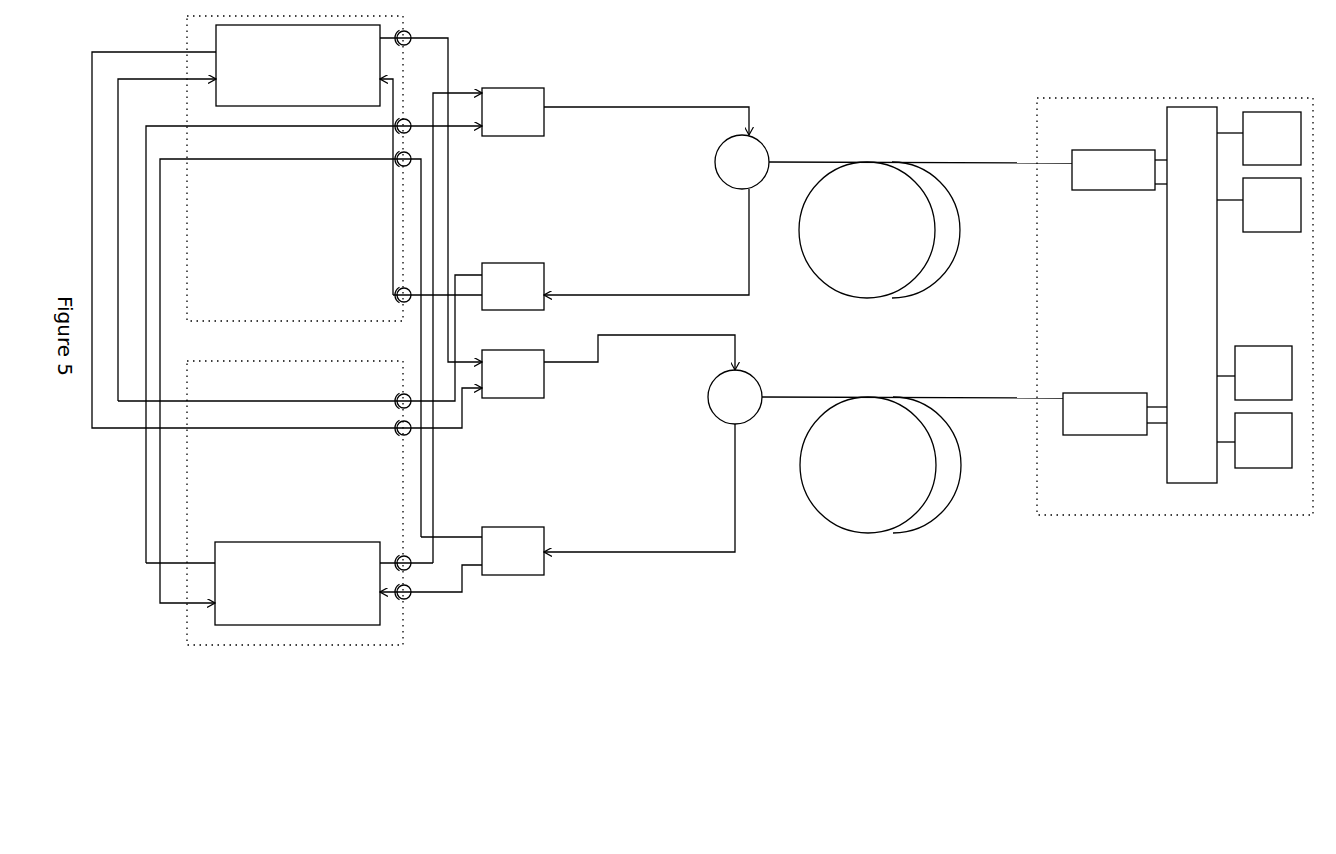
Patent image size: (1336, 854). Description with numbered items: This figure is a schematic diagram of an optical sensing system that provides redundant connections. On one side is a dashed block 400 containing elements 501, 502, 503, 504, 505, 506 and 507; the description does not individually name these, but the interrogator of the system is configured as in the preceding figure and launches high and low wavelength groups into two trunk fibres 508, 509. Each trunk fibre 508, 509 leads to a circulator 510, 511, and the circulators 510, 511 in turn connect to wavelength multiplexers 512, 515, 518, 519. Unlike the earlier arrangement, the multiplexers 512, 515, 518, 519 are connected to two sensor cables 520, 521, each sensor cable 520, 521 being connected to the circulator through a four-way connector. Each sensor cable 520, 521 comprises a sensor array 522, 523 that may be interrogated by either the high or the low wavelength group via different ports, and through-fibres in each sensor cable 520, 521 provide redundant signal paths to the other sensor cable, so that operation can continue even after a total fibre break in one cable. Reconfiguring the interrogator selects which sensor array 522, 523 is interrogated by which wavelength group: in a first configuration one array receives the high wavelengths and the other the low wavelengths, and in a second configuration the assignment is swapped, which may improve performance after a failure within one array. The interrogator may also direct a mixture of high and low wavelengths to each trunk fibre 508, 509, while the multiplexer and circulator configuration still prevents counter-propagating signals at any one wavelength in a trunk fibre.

The controller 400 is at (1175, 306).
The input unit 501 is at (1272, 138).
The input unit 502 is at (1263, 373).
The input unit 503 is at (1272, 205).
The input unit 504 is at (1263, 440).
The driver circuit 505 is at (1113, 170).
The driver circuit 506 is at (1105, 414).
The processing unit 507 is at (1192, 295).
The trunk fibre 508 is at (879, 230).
The trunk fibre 509 is at (880, 465).
The circulator 510 is at (747, 162).
The circulator 511 is at (740, 397).
The wavelength multiplexer 512 is at (513, 286).
The wavelength multiplexer 515 is at (513, 112).
The wavelength multiplexer 518 is at (513, 374).
The wavelength multiplexer 519 is at (513, 551).
The sensor cable 520 is at (295, 168).
The sensor cable 521 is at (295, 503).
The sensor array 522 is at (298, 65).
The sensor array 523 is at (297, 583).